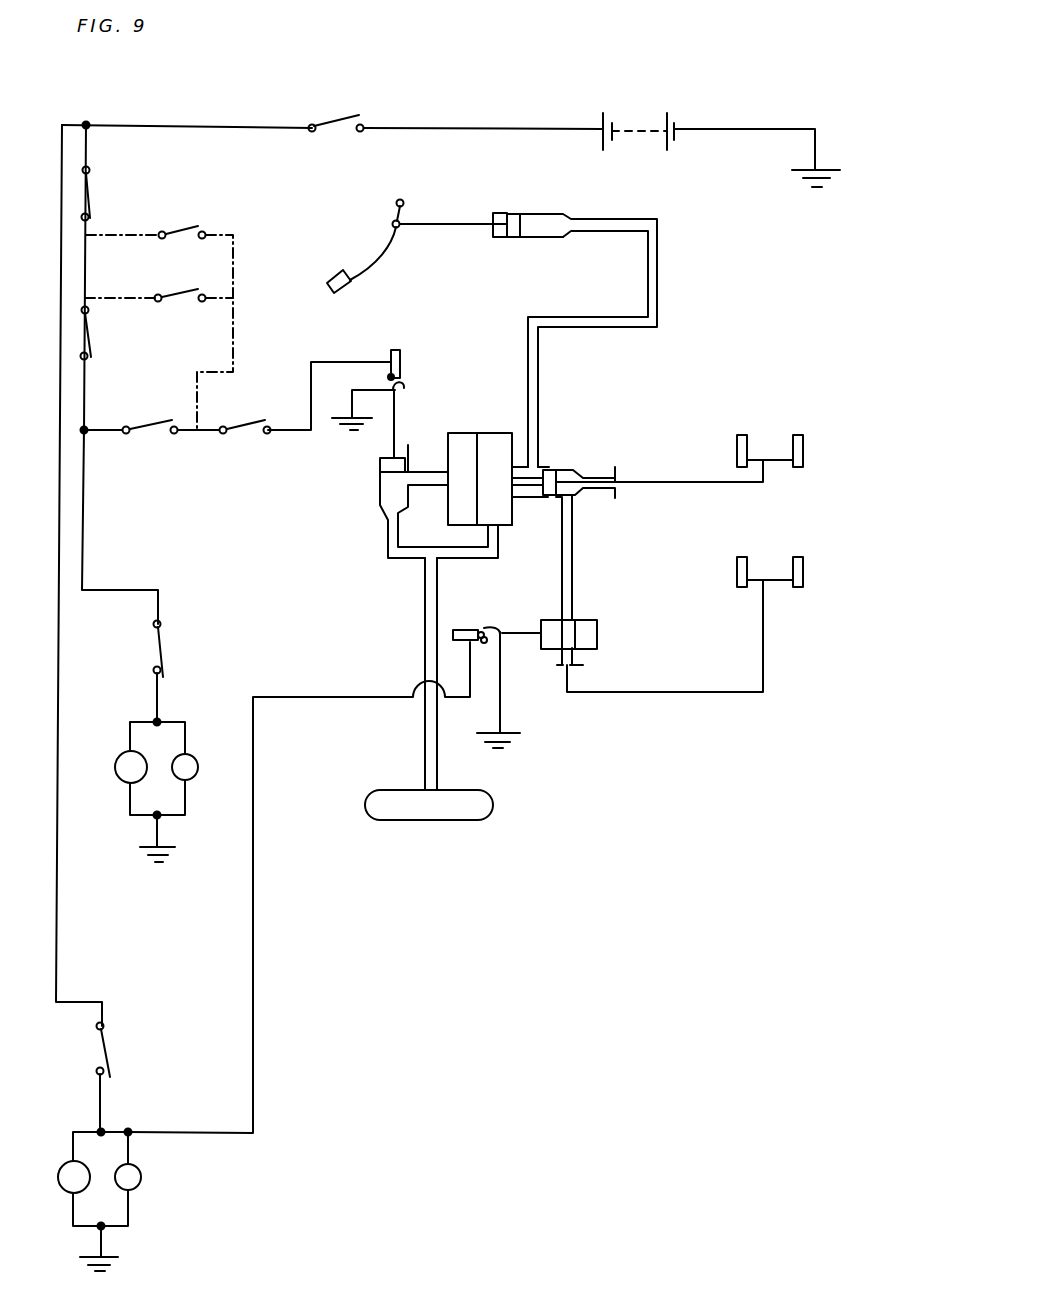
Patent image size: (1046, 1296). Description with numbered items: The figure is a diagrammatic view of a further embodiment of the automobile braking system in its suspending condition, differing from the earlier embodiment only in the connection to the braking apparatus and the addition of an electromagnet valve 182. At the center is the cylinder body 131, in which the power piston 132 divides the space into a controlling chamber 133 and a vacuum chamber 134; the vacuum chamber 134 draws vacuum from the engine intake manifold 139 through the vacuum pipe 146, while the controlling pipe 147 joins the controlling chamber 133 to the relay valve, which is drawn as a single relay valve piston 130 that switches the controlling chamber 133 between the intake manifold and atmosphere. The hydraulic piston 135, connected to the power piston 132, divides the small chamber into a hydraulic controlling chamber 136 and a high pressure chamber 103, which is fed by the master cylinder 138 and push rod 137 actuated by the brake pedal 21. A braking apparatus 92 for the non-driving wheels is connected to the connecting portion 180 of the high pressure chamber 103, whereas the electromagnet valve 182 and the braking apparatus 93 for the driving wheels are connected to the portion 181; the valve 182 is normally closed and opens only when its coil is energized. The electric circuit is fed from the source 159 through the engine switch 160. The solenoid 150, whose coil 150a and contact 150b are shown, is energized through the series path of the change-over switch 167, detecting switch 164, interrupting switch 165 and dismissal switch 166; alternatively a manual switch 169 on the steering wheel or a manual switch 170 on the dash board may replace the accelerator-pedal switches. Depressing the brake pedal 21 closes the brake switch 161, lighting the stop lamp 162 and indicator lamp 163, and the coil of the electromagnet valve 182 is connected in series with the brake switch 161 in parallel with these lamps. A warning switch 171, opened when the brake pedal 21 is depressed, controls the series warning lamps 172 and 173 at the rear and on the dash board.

The brake pedal 21 is at (333, 274).
The braking apparatus for non-driving wheels 92 is at (777, 460).
The braking apparatus for driving wheels 93 is at (777, 580).
The high pressure chamber 103 is at (579, 490).
The relay valve piston 130 is at (382, 477).
The cylinder body 131 is at (447, 442).
The power piston 132 is at (473, 447).
The controlling chamber 133 is at (465, 445).
The vacuum chamber 134 is at (502, 445).
The hydraulic piston 135 is at (560, 468).
The hydraulic controlling chamber 136 is at (527, 488).
The push rod 137 is at (523, 222).
The master cylinder 138 is at (492, 212).
The intake manifold 139 is at (373, 817).
The vacuum pipe 146 is at (498, 545).
The controlling pipe 147 is at (428, 487).
The solenoid 150 is at (416, 387).
The solenoid coil 150a is at (403, 369).
The fixed contact 150b is at (400, 350).
The source 159 is at (633, 132).
The engine switch 160 is at (456, 135).
The brake switch 161 is at (122, 1078).
The stop lamp 162 is at (58, 1187).
The indicator lamp 163 is at (143, 1187).
The detecting switch 164 is at (106, 333).
The interrupting switch 165 is at (151, 438).
The dismissal switch 166 is at (245, 438).
The change-over switch 167 is at (106, 194).
The manual switch 169 is at (200, 223).
The manual switch 170 is at (200, 287).
The warning switch 171 is at (177, 672).
The warning lamp 172 is at (115, 770).
The warning lamp 173 is at (198, 770).
The connecting portion 180 is at (608, 470).
The portion 181 is at (573, 552).
The electromagnet valve 182 is at (545, 673).